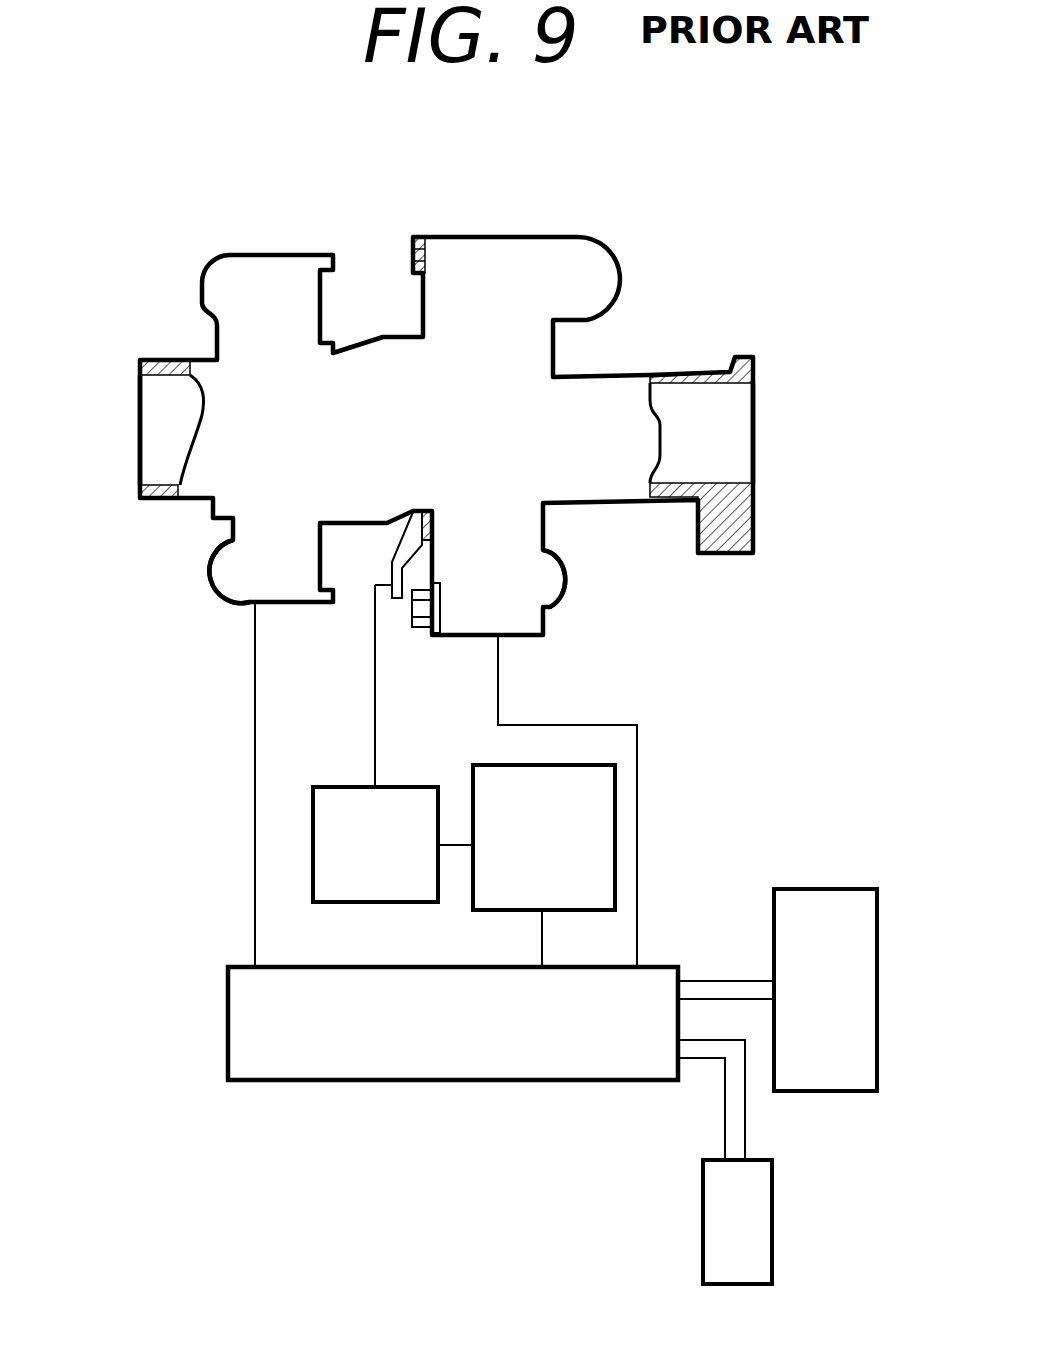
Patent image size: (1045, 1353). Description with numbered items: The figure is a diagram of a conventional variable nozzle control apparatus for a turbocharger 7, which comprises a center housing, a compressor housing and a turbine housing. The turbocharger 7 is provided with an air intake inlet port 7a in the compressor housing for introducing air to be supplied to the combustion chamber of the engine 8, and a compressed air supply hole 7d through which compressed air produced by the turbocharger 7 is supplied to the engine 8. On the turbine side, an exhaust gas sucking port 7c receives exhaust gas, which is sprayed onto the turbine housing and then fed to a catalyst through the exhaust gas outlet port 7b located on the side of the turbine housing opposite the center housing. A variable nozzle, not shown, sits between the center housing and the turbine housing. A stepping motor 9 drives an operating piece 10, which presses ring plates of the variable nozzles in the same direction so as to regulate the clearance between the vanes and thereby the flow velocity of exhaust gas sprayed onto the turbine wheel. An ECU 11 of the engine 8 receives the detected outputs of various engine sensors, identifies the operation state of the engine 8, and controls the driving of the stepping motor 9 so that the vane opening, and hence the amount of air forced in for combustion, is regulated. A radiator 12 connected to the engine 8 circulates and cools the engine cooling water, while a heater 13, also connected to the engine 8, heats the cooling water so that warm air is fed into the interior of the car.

The turbocharger 7 is at (615, 258).
The air intake inlet port 7a is at (167, 433).
The exhaust gas outlet port 7b is at (730, 448).
The exhaust gas sucking port 7c is at (543, 585).
The compressed air supply hole 7d is at (240, 575).
The engine 8 is at (288, 1083).
The stepping motor 9 is at (313, 830).
The operating piece 10 is at (393, 600).
The ECU 11 is at (615, 790).
The radiator 12 is at (840, 889).
The heater 13 is at (772, 1175).